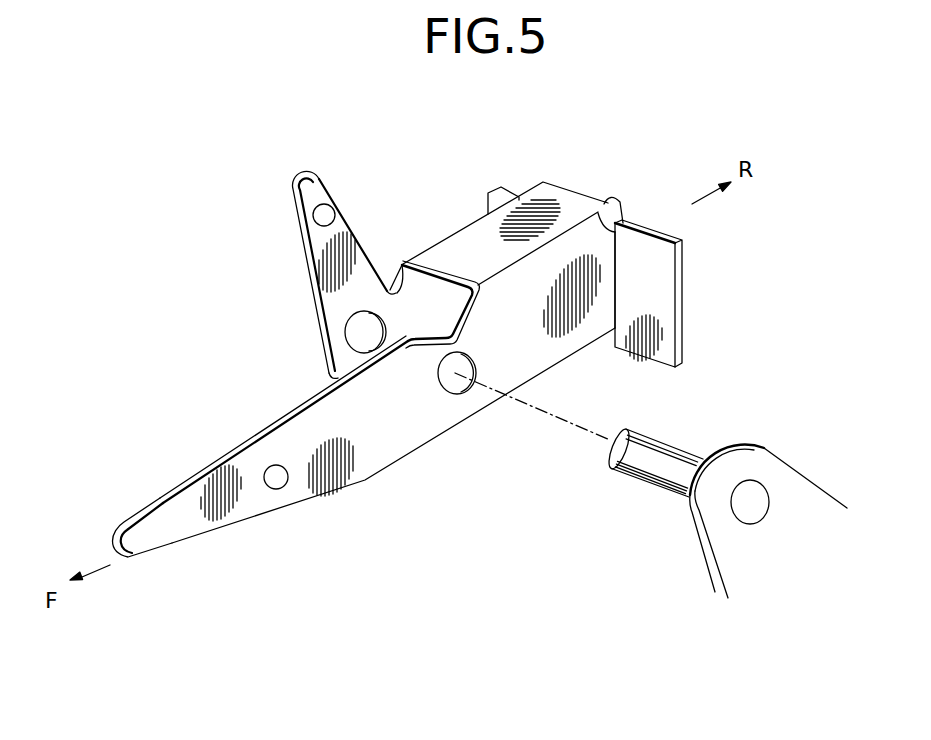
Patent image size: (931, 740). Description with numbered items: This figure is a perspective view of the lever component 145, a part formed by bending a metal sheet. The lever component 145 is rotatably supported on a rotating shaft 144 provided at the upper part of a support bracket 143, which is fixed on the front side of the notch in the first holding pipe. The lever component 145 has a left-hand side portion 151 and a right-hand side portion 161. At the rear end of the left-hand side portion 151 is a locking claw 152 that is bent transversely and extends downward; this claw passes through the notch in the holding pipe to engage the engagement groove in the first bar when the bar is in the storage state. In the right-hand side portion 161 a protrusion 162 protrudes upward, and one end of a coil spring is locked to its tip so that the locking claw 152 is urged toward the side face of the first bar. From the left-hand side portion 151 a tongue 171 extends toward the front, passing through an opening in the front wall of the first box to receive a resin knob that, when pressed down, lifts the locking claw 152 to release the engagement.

The lever component 145 is at (234, 154).
The protrusion 162 is at (286, 241).
The right-hand side portion 161 is at (402, 265).
The left-hand side portion 151 is at (373, 443).
The tongue 171 is at (155, 532).
The locking claw 152 is at (694, 306).
The support bracket 143 is at (773, 445).
The rotating shaft 144 is at (643, 452).